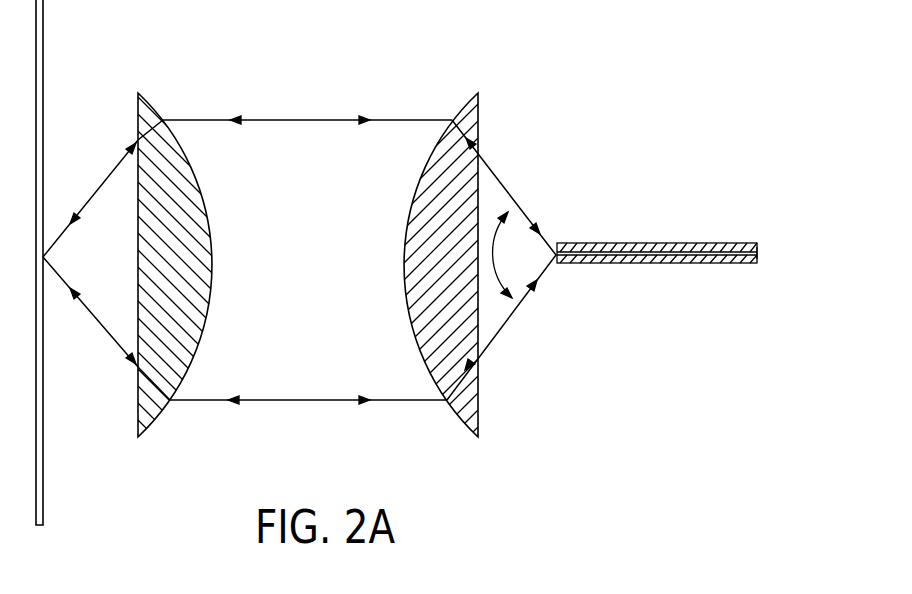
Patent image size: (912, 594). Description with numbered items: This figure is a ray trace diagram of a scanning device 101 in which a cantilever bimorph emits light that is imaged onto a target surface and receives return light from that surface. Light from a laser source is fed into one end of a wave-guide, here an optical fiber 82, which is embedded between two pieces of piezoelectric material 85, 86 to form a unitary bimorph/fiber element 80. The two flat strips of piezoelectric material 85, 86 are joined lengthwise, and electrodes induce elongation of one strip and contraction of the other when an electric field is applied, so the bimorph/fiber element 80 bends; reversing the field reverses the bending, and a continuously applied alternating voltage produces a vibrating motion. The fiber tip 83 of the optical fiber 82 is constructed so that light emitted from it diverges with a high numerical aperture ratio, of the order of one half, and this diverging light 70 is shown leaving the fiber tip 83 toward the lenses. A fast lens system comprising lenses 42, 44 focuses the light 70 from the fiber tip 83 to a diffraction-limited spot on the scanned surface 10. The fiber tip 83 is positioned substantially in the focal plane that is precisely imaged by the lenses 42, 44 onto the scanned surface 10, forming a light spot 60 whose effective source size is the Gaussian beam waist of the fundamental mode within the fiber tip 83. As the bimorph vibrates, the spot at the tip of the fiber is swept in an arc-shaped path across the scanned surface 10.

The scanned surface 10 is at (43, 53).
The light spot 60 is at (44, 267).
The lens 42 is at (187, 318).
The lens 44 is at (457, 318).
The scanning device 101 is at (348, 78).
The converging light beam 70 is at (517, 196).
The fiber tip 83 is at (553, 268).
The bimorph/fiber element 80 is at (689, 241).
The piezoelectric material 85 is at (725, 243).
The piezoelectric material 86 is at (660, 263).
The optical fiber 82 is at (757, 253).